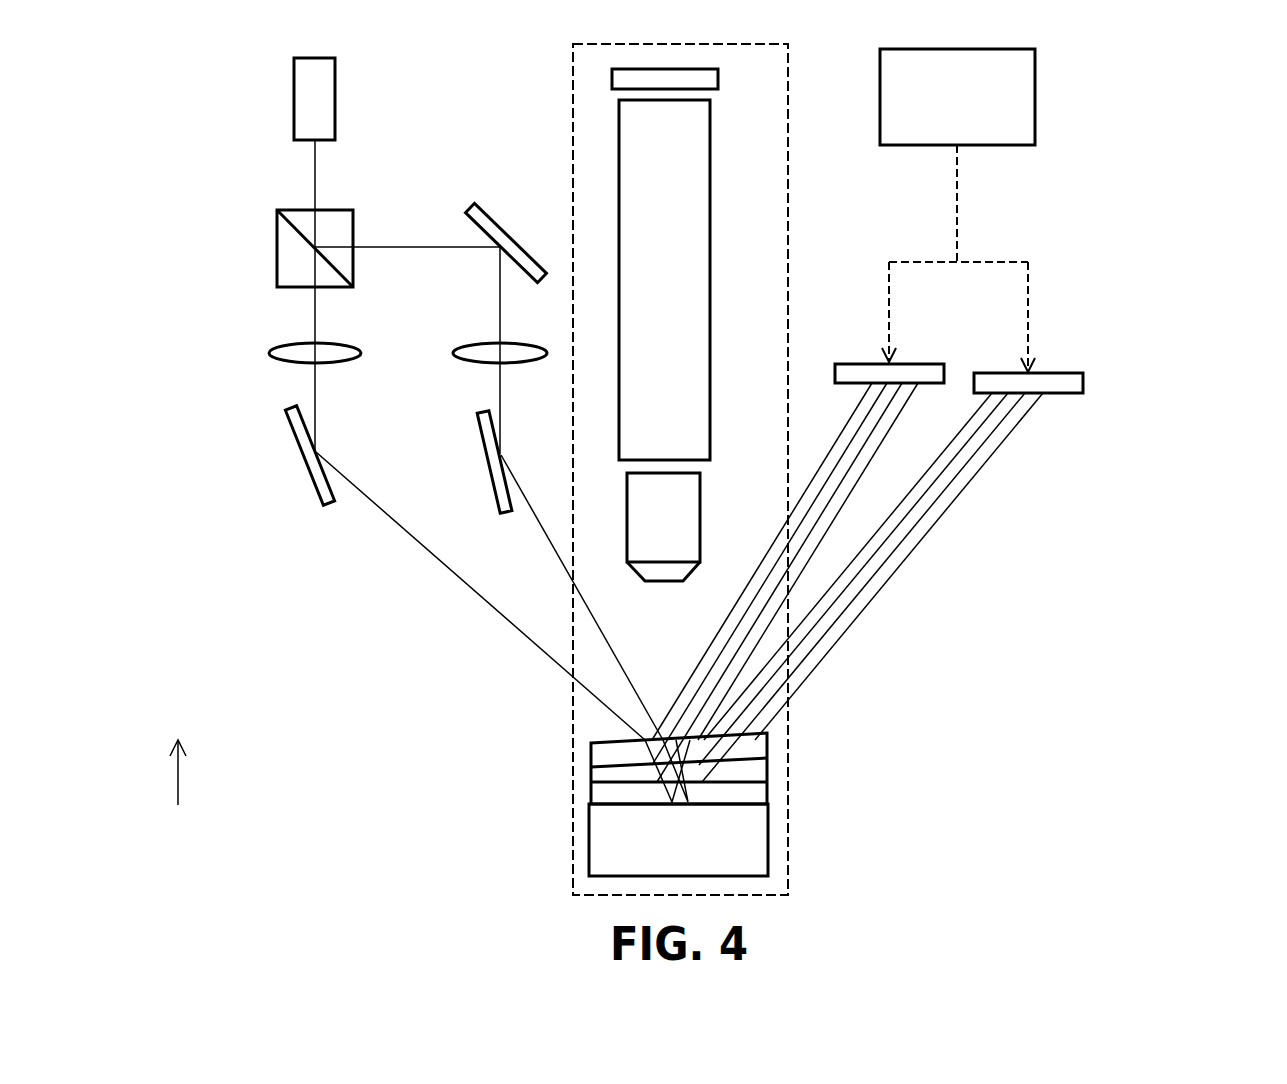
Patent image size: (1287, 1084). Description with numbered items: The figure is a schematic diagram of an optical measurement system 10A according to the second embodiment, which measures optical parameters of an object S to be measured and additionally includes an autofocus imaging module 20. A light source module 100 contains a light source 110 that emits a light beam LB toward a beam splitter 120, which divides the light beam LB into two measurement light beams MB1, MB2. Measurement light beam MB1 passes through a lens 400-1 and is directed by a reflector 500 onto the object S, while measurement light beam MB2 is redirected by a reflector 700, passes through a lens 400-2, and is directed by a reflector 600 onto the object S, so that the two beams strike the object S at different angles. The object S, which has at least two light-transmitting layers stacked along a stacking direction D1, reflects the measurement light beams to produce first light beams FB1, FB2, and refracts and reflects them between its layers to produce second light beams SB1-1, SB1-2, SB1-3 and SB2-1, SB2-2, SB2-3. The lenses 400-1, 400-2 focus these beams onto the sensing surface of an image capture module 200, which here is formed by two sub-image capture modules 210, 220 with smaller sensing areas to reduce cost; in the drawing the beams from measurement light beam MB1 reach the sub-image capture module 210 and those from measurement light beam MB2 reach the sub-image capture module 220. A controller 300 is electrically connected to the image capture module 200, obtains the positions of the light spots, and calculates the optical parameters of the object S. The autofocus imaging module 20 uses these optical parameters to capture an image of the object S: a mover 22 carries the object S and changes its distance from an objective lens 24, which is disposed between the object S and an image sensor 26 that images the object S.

The optical measurement system 10A is at (940, 913).
The light source module 100 is at (400, 114).
The light source 110 is at (296, 98).
The light beam LB is at (314, 172).
The beam splitter 120 is at (278, 248).
The measurement light beam MB1 is at (314, 312).
The measurement light beam MB2 is at (499, 292).
The reflector 700 is at (467, 208).
The lens 400-1 is at (270, 352).
The lens 400-2 is at (454, 354).
The reflector 500 is at (287, 429).
The reflector 600 is at (478, 431).
The autofocus imaging module 20 is at (572, 70).
The image sensor 26 is at (718, 76).
The objective lens 24 is at (695, 510).
The object to be measured S is at (804, 771).
The mover 22 is at (755, 836).
The image capture module 200 is at (1178, 305).
The sub-image capture module 210 is at (1073, 373).
The sub-image capture module 220 is at (923, 364).
The controller 300 is at (1036, 97).
The first light beam FB1 is at (909, 493).
The first light beam FB2 is at (831, 451).
The second light beam SB1-1 is at (947, 467).
The second light beam SB1-2 is at (988, 437).
The second light beam SB1-3 is at (1032, 410).
The second light beam SB2-1 is at (820, 492).
The second light beam SB2-2 is at (842, 480).
The second light beam SB2-3 is at (864, 470).
The stacking direction D1 is at (178, 756).